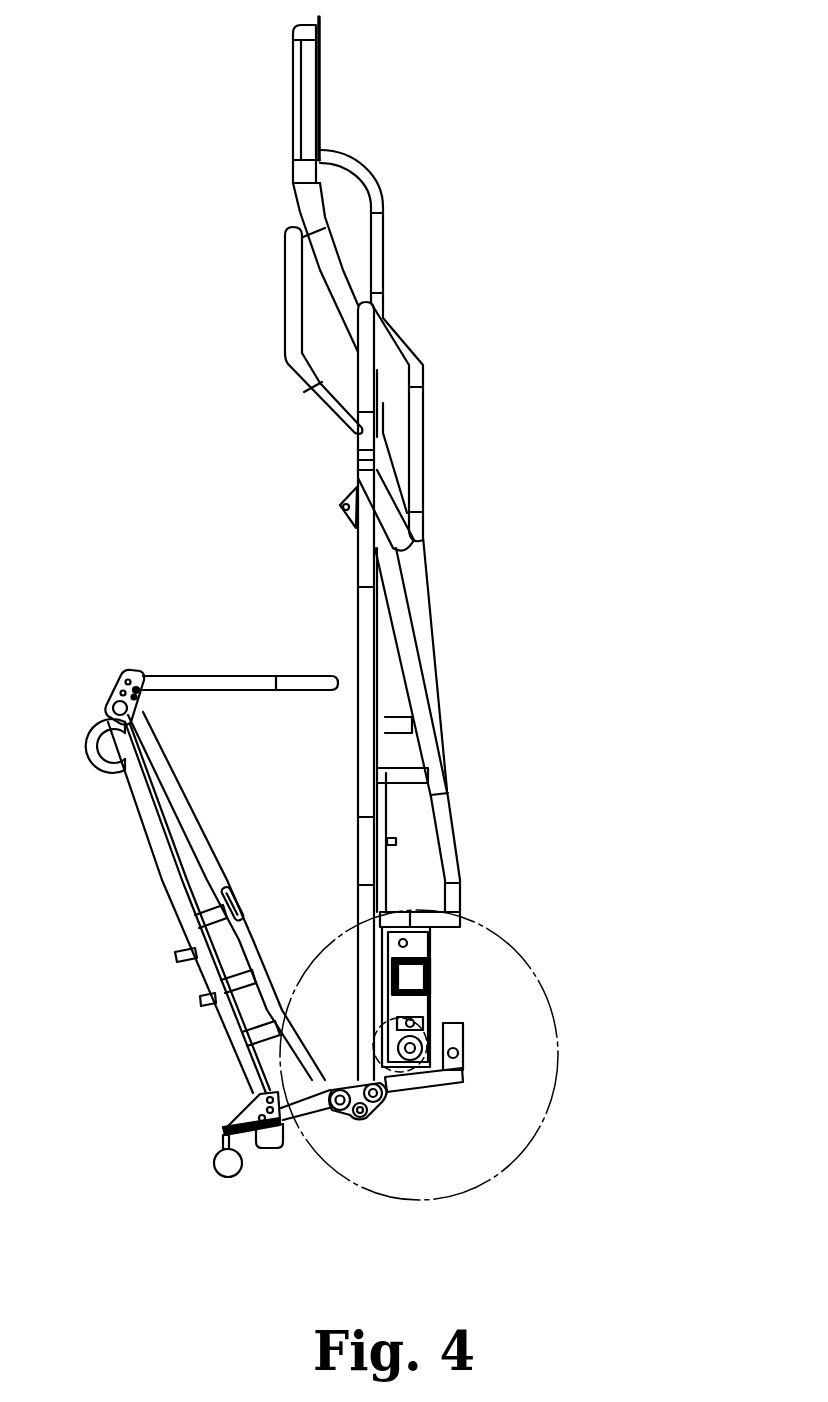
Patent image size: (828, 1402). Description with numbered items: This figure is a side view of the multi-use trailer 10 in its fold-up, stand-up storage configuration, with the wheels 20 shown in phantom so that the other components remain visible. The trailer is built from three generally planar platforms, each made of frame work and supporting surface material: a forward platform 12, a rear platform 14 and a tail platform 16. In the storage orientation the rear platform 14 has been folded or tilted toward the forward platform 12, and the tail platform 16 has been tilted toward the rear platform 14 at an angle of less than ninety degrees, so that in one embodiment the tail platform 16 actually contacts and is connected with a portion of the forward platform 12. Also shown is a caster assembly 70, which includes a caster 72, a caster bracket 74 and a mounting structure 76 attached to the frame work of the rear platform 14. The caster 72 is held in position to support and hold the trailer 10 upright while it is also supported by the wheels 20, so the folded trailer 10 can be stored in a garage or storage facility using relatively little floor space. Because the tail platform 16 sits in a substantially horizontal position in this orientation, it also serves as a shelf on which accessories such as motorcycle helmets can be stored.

The multi-use trailer 10 is at (243, 487).
The forward platform 12 is at (368, 645).
The rear platform 14 is at (210, 848).
The tail platform 16 is at (242, 693).
The wheels 20 is at (553, 1033).
The caster assembly 70 is at (224, 1124).
The caster 72 is at (222, 1180).
The caster bracket 74 is at (266, 1150).
The mounting structure 76 is at (316, 1128).